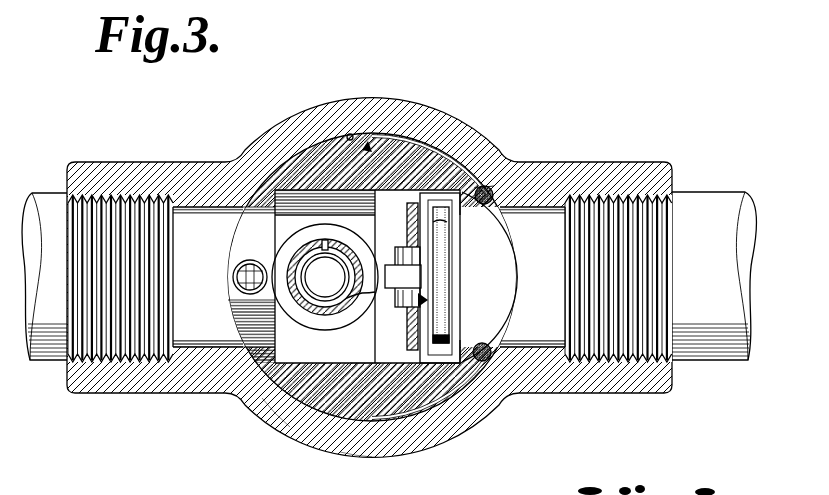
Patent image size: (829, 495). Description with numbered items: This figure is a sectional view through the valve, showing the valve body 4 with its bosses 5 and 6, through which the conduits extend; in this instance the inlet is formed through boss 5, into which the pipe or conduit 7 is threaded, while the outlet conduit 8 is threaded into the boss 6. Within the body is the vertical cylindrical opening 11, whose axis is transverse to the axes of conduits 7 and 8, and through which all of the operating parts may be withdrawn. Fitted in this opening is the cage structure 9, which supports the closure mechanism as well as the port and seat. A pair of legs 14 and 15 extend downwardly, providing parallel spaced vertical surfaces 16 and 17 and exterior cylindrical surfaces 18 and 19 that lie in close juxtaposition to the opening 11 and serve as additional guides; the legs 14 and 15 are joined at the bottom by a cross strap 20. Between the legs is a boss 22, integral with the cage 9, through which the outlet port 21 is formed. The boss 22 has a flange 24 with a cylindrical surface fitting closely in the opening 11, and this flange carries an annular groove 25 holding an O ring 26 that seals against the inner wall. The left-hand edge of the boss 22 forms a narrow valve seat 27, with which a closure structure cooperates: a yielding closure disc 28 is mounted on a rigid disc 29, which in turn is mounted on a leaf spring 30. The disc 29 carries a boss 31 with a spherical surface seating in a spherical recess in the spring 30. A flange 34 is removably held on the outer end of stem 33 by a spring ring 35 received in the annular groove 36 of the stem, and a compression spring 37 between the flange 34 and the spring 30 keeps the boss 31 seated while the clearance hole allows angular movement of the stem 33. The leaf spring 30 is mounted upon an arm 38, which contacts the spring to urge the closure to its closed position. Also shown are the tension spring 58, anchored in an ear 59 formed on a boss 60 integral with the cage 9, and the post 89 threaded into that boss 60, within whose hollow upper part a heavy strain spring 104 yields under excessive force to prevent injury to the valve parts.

The valve body 4 is at (298, 127).
The boss 5 is at (120, 175).
The boss 6 is at (630, 172).
The pipe or conduit 7 is at (57, 197).
The outlet conduit 8 is at (715, 196).
The cage structure 9 is at (366, 146).
The vertical cylindrical opening 11 is at (350, 135).
The leg 14 is at (352, 418).
The leg 15 is at (410, 150).
The vertical surface 16 is at (331, 192).
The vertical surface 17 is at (357, 360).
The exterior cylindrical surface 18 is at (322, 140).
The exterior cylindrical surface 19 is at (320, 418).
The cross strap 20 is at (290, 362).
The outlet port 21 is at (465, 340).
The boss 22 is at (512, 205).
The flange 24 is at (487, 188).
The annular groove 25 is at (494, 203).
The O ring 26 is at (486, 362).
The valve seat 27 is at (438, 228).
The yielding closure disc 28 is at (446, 252).
The rigid disc 29 is at (436, 268).
The leaf spring 30 is at (420, 305).
The boss 31 is at (418, 298).
The stem 33 is at (410, 256).
The flange 34 is at (390, 262).
The spring ring 35 is at (303, 305).
The annular groove 36 is at (388, 277).
The compression spring 37 is at (404, 250).
The arm 38 is at (408, 336).
The tension spring 58 is at (238, 277).
The ear 59 is at (239, 268).
The boss 60 is at (276, 300).
The post 89 is at (305, 313).
The strain spring 104 is at (303, 263).